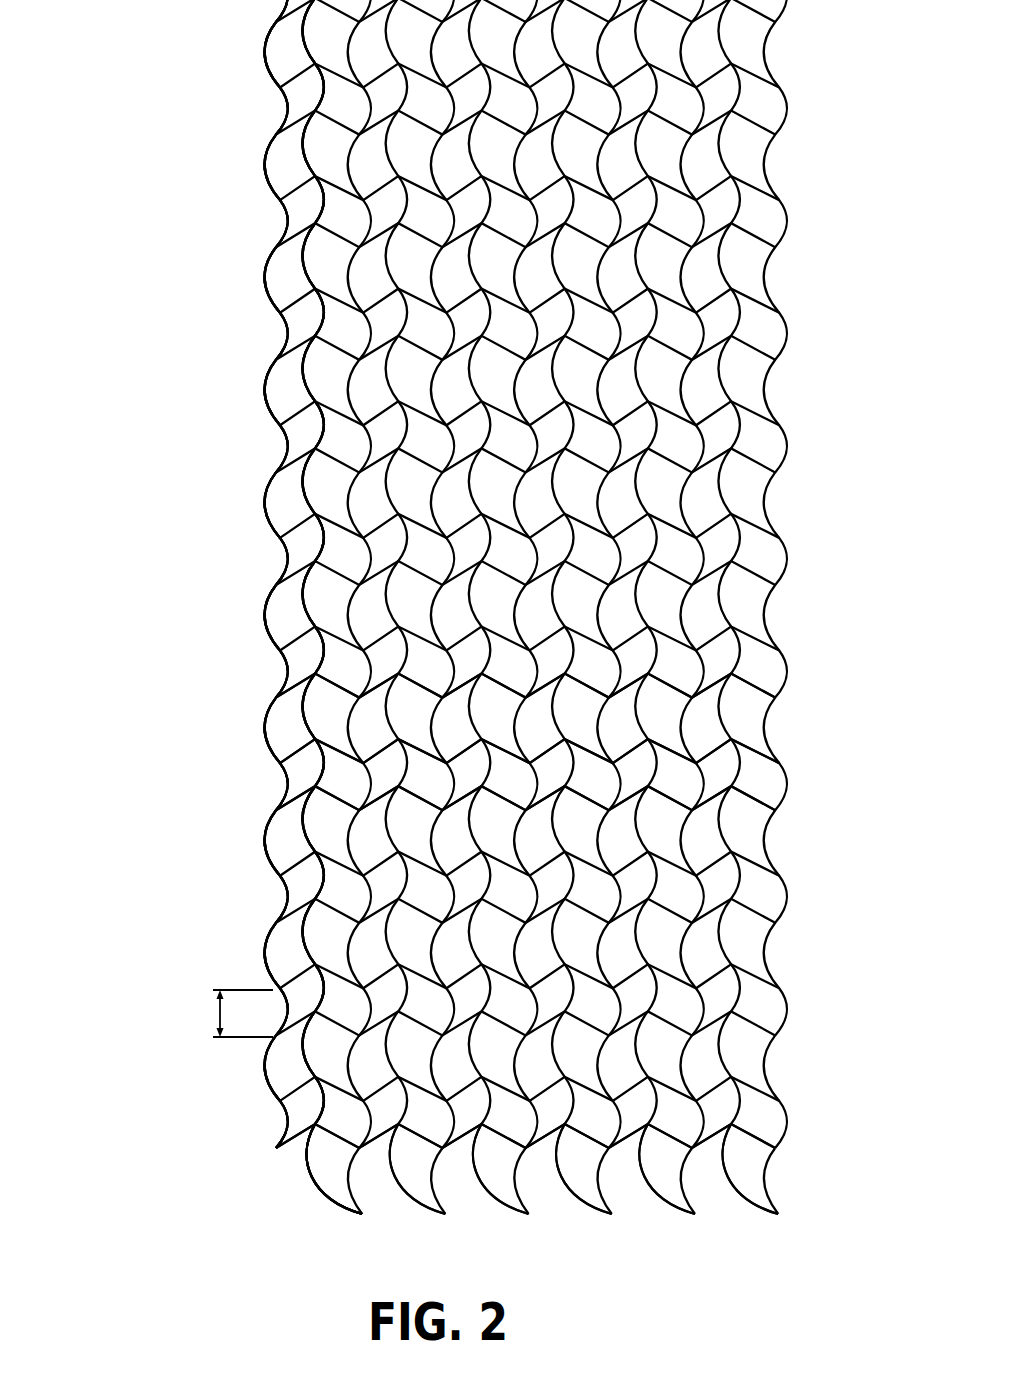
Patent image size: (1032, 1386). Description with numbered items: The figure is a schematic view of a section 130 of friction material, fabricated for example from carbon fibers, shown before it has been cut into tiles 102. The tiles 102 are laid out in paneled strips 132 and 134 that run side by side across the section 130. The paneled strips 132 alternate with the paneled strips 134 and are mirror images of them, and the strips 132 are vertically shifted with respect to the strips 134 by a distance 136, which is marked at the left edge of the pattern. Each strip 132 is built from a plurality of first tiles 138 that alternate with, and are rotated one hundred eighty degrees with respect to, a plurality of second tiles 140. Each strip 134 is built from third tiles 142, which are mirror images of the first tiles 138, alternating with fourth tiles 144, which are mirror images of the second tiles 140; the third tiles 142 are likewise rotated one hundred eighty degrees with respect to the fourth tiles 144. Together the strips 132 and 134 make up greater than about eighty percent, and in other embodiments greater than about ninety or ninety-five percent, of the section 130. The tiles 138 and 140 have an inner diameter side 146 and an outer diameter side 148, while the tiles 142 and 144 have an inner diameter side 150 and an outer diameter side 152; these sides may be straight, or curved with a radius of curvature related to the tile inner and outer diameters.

The section of friction material 130 is at (137, 290).
The tiles 102 is at (298, 441).
The paneled strips 132 is at (303, 1137).
The paneled strips 134 is at (343, 1203).
The distance 136 is at (213, 1014).
The first tiles 138 is at (297, 659).
The second tiles 140 is at (283, 618).
The third tiles 142 is at (335, 828).
The fourth tiles 144 is at (322, 702).
The inner diameter side 146 is at (297, 775).
The outer diameter side 148 is at (292, 691).
The inner diameter side 150 is at (317, 793).
The outer diameter side 152 is at (280, 729).